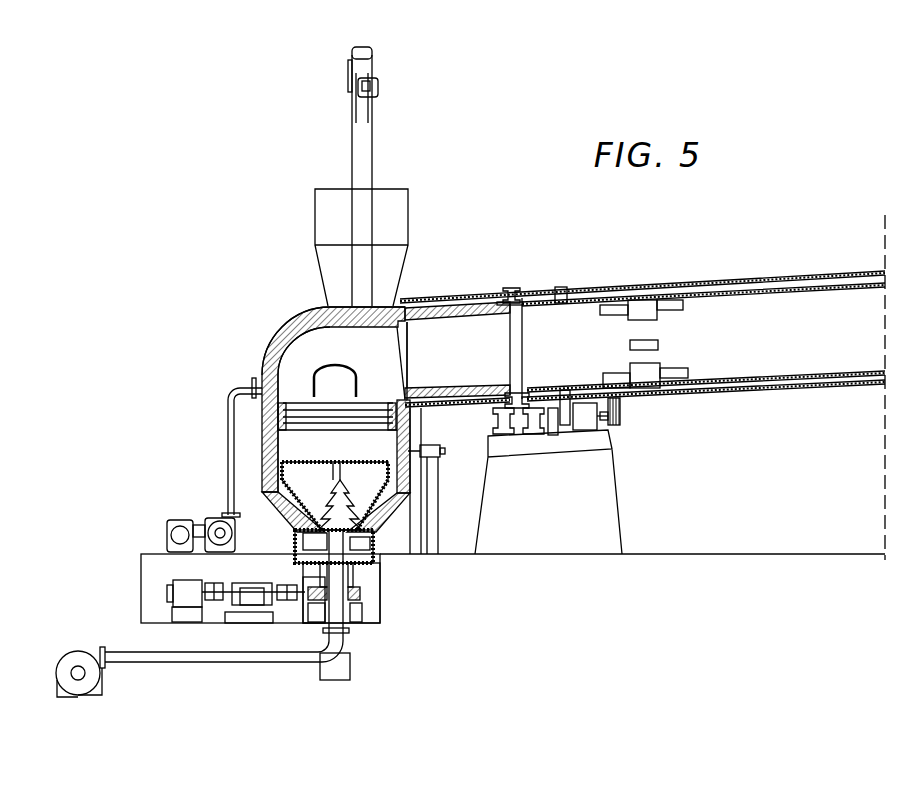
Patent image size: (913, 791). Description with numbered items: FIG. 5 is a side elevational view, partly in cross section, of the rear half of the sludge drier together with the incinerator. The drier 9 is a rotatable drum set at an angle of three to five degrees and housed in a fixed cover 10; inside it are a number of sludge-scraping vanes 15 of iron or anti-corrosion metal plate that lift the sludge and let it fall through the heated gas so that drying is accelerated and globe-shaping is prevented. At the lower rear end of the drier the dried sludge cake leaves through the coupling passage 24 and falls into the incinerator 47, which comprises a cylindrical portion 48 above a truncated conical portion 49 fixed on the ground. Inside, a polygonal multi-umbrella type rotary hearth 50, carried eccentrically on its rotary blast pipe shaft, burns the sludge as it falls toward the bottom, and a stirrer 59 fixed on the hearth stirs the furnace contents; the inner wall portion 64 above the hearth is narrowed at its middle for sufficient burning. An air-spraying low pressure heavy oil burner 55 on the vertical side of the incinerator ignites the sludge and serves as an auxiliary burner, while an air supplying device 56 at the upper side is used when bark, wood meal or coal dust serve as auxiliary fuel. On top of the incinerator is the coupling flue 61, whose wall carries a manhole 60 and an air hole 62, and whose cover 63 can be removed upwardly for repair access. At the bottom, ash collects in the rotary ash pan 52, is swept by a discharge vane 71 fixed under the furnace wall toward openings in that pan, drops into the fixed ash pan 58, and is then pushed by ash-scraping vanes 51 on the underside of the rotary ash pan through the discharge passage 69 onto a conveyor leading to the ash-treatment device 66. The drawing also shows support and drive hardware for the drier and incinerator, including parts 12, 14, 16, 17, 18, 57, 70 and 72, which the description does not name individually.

The drier 9 is at (786, 290).
The fixed cover 10 is at (726, 283).
The flange fitting 12 is at (512, 288).
The pedestal support 14 is at (495, 425).
The sludge-scraping vanes 15 is at (672, 300).
The drive cylinder 16 is at (621, 425).
The support bar 17 is at (565, 392).
The fitting 18 is at (565, 287).
The coupling passage 24 is at (441, 312).
The incinerator 47 is at (262, 462).
The cylindrical portion 48 is at (279, 443).
The truncated conical portion 49 is at (380, 528).
The rotary hearth 50 is at (330, 505).
The ash-scraping vanes 51 is at (307, 558).
The rotary ash pan 52 is at (295, 537).
The heavy oil burner 55 is at (428, 445).
The air supplying device 56 is at (230, 398).
The blower 57 is at (215, 521).
The fixed ash pan 58 is at (307, 566).
The stirrer 59 is at (362, 462).
The manhole 60 is at (314, 380).
The coupling flue 61 is at (293, 326).
The air hole 62 is at (272, 362).
The cover 63 is at (282, 340).
The inner wall portion 64 is at (370, 410).
The ash-treatment device 66 is at (408, 212).
The discharge passage 69 is at (373, 136).
The bearing housing 70 is at (318, 594).
The discharge vane 71 is at (375, 560).
The blower 72 is at (83, 655).